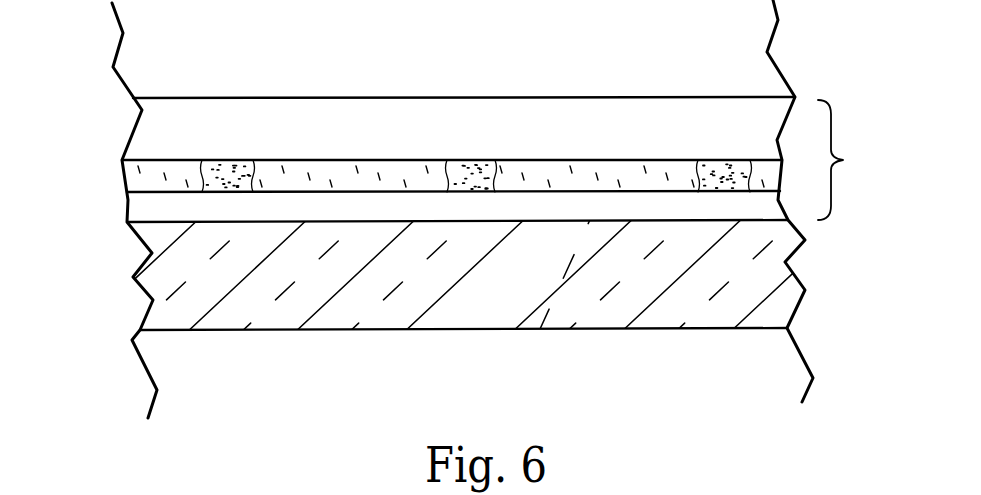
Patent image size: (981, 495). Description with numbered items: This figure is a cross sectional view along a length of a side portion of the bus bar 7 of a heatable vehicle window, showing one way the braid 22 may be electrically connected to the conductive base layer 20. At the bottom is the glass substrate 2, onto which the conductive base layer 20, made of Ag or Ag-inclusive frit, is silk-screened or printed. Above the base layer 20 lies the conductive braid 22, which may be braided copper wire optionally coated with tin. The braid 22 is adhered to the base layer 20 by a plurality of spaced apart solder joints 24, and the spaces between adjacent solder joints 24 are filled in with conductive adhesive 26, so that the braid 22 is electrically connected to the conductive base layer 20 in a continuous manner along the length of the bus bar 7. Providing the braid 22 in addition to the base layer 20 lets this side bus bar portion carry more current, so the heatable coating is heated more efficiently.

The first glass substrate 2 is at (613, 307).
The first elongated bus bar 7 is at (830, 190).
The conductive base layer 20 is at (138, 205).
The conductive braid 22 is at (143, 132).
The solder joints 24 is at (233, 168).
The conductive adhesive 26 is at (127, 180).